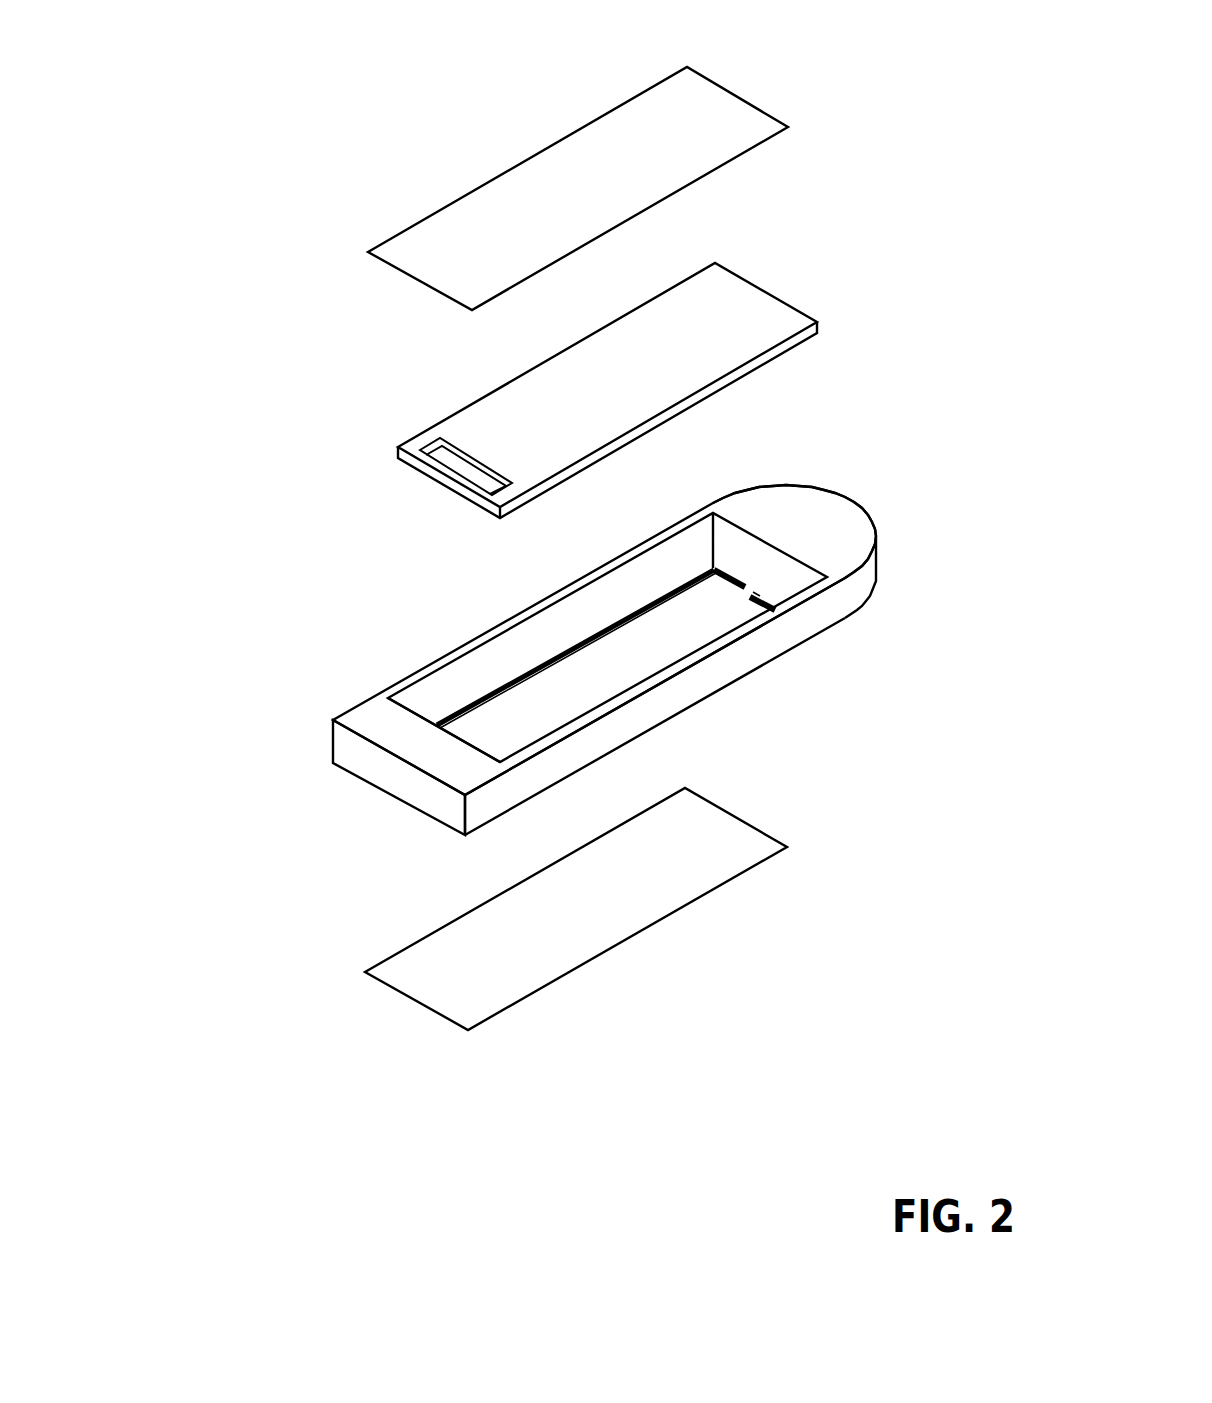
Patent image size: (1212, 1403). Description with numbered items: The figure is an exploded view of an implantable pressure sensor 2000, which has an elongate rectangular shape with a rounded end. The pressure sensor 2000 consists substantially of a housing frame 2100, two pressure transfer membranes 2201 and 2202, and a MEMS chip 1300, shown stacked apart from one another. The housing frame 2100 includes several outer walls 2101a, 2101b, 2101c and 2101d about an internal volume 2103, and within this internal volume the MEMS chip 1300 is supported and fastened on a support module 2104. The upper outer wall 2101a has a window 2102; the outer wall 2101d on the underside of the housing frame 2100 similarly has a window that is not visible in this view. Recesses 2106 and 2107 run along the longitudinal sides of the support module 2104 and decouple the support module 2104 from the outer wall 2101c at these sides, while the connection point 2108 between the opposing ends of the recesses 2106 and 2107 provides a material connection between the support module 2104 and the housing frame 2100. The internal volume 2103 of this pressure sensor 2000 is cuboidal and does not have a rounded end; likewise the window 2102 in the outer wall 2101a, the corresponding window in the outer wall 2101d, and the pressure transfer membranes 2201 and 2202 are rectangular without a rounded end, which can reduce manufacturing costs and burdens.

The implantable pressure sensor 2000 is at (248, 220).
The pressure transfer membrane 2201 is at (552, 178).
The MEMS chip 1300 is at (733, 313).
The housing frame 2100 is at (572, 751).
The outer wall 2101a is at (373, 712).
The outer wall 2101b is at (347, 752).
The outer wall 2101c is at (867, 587).
The outer wall 2101d is at (372, 790).
The window 2102 is at (468, 748).
The internal volume 2103 is at (483, 687).
The support module 2104 is at (583, 697).
The recess 2106 is at (660, 603).
The recess 2107 is at (770, 610).
The connection point 2108 is at (753, 592).
The pressure transfer membrane 2202 is at (610, 895).